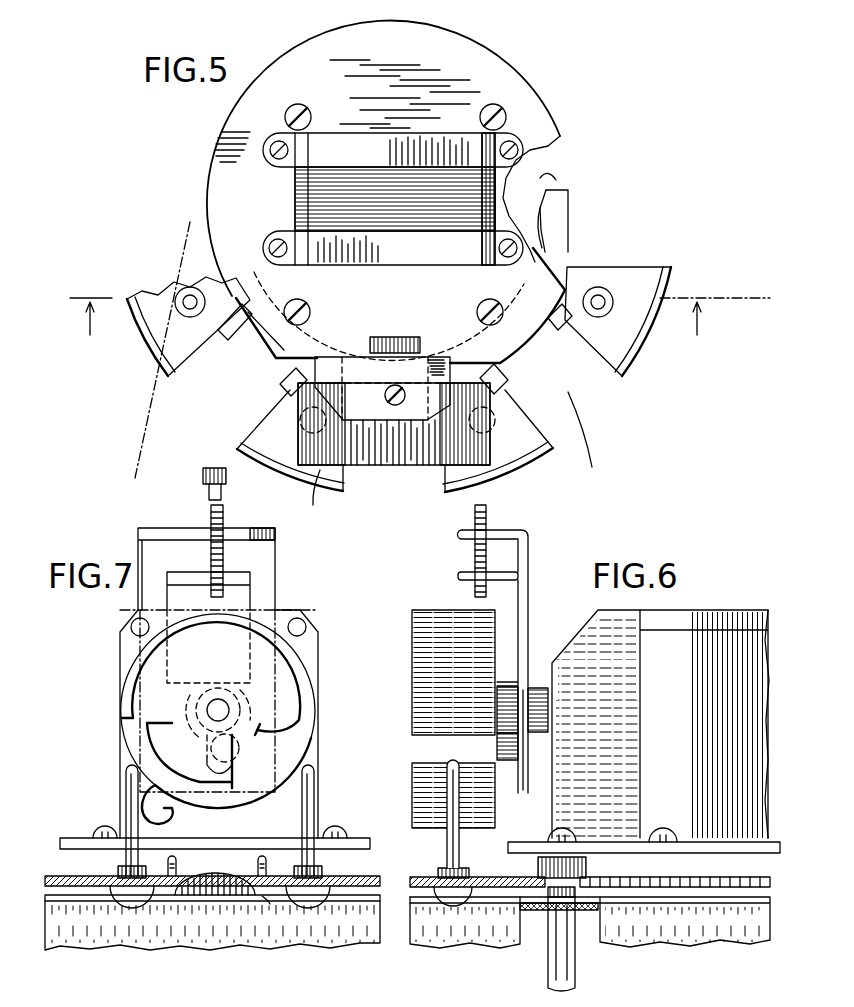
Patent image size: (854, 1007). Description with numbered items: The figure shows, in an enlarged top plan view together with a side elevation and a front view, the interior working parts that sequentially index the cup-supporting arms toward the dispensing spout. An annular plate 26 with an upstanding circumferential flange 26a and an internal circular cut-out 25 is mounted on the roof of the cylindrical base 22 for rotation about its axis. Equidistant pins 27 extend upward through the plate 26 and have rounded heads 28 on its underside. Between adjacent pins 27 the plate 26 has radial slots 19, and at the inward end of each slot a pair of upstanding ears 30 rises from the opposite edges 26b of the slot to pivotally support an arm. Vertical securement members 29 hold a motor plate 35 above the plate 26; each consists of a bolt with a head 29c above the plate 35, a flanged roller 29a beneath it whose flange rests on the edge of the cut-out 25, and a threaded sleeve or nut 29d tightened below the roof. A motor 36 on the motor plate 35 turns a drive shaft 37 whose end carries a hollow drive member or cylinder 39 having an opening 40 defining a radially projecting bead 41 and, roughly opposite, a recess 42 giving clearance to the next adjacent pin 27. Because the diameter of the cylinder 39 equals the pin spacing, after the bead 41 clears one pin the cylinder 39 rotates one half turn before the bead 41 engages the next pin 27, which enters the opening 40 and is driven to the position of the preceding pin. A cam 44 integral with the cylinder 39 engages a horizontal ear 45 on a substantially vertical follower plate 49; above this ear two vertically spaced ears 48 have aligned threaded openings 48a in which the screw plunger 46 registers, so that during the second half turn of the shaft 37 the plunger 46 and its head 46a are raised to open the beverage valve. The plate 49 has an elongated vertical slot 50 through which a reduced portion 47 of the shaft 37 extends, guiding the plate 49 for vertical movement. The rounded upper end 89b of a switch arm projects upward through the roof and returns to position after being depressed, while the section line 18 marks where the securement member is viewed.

In FIG. 5, the section line 18- 18 is at (420, 350).
In FIG. 5, the radial slot 19 is at (371, 511).
In FIG. 7, the radial slot 19 is at (262, 896).
In FIG. 7, the cylindrical base 22 is at (355, 922).
In FIG. 6, the cylindrical base 22 is at (733, 927).
In FIG. 5, the internal circular cut-out 25 is at (559, 211).
In FIG. 6, the internal circular cut-out 25 is at (688, 882).
In FIG. 5, the annular plate 26 is at (572, 223).
In FIG. 6, the annular plate 26 is at (497, 876).
In FIG. 5, the upstanding circumferential flange 26a is at (656, 322).
In FIG. 5, the edges of the slot 26b is at (254, 428).
In FIG. 5, the pin 27 is at (187, 317).
In FIG. 7, the pin 27 is at (126, 787).
In FIG. 7, the rounded head 28 is at (131, 893).
In FIG. 6, the rounded head 28 is at (450, 892).
In FIG. 6, the vertical securement member 29 is at (541, 966).
In FIG. 6, the flanged roller 29a is at (590, 867).
In FIG. 5, the head 29c is at (302, 105).
In FIG. 6, the head 29c is at (562, 830).
In FIG. 6, the threaded sleeve or nut 29d is at (578, 953).
In FIG. 5, the upstanding ear 30 is at (570, 262).
In FIG. 7, the upstanding ear 30 is at (256, 864).
In FIG. 5, the motor plate 35 is at (488, 58).
In FIG. 7, the motor plate 35 is at (360, 846).
In FIG. 6, the motor plate 35 is at (613, 848).
In FIG. 5, the motor 36 is at (300, 180).
In FIG. 7, the motor 36 is at (302, 646).
In FIG. 6, the motor 36 is at (672, 607).
In FIG. 5, the drive shaft 37 is at (386, 344).
In FIG. 6, the drive shaft 37 is at (540, 738).
In FIG. 5, the drive member or cylinder 39 is at (345, 438).
In FIG. 7, the drive member or cylinder 39 is at (252, 630).
In FIG. 6, the drive member or cylinder 39 is at (438, 616).
In FIG. 7, the opening 40 is at (137, 750).
In FIG. 7, the bead 41 is at (150, 820).
In FIG. 7, the recess 42 is at (303, 760).
In FIG. 6, the recess 42 is at (443, 762).
In FIG. 7, the cam 44 is at (197, 718).
In FIG. 6, the cam 44 is at (507, 750).
In FIG. 5, the horizontal ear 45 is at (360, 368).
In FIG. 7, the horizontal ear 45 is at (193, 681).
In FIG. 6, the horizontal ear 45 is at (506, 682).
In FIG. 7, the screw plunger 46 is at (225, 521).
In FIG. 6, the screw plunger 46 is at (488, 516).
In FIG. 5, the head of the plunger 46a is at (402, 403).
In FIG. 7, the head of the plunger 46a is at (209, 477).
In FIG. 7, the reduced portion of the motor shaft 47 is at (226, 709).
In FIG. 6, the reduced portion of the motor shaft 47 is at (521, 700).
In FIG. 5, the vertically spaced ears 48 is at (440, 358).
In FIG. 7, the vertically spaced ears 48 is at (179, 561).
In FIG. 6, the threaded openings 48a is at (478, 565).
In FIG. 6, the follower plate 49 is at (529, 604).
In FIG. 7, the elongated vertical slot 50 is at (232, 754).
In FIG. 7, the upper end of the switch arm 89b is at (215, 886).